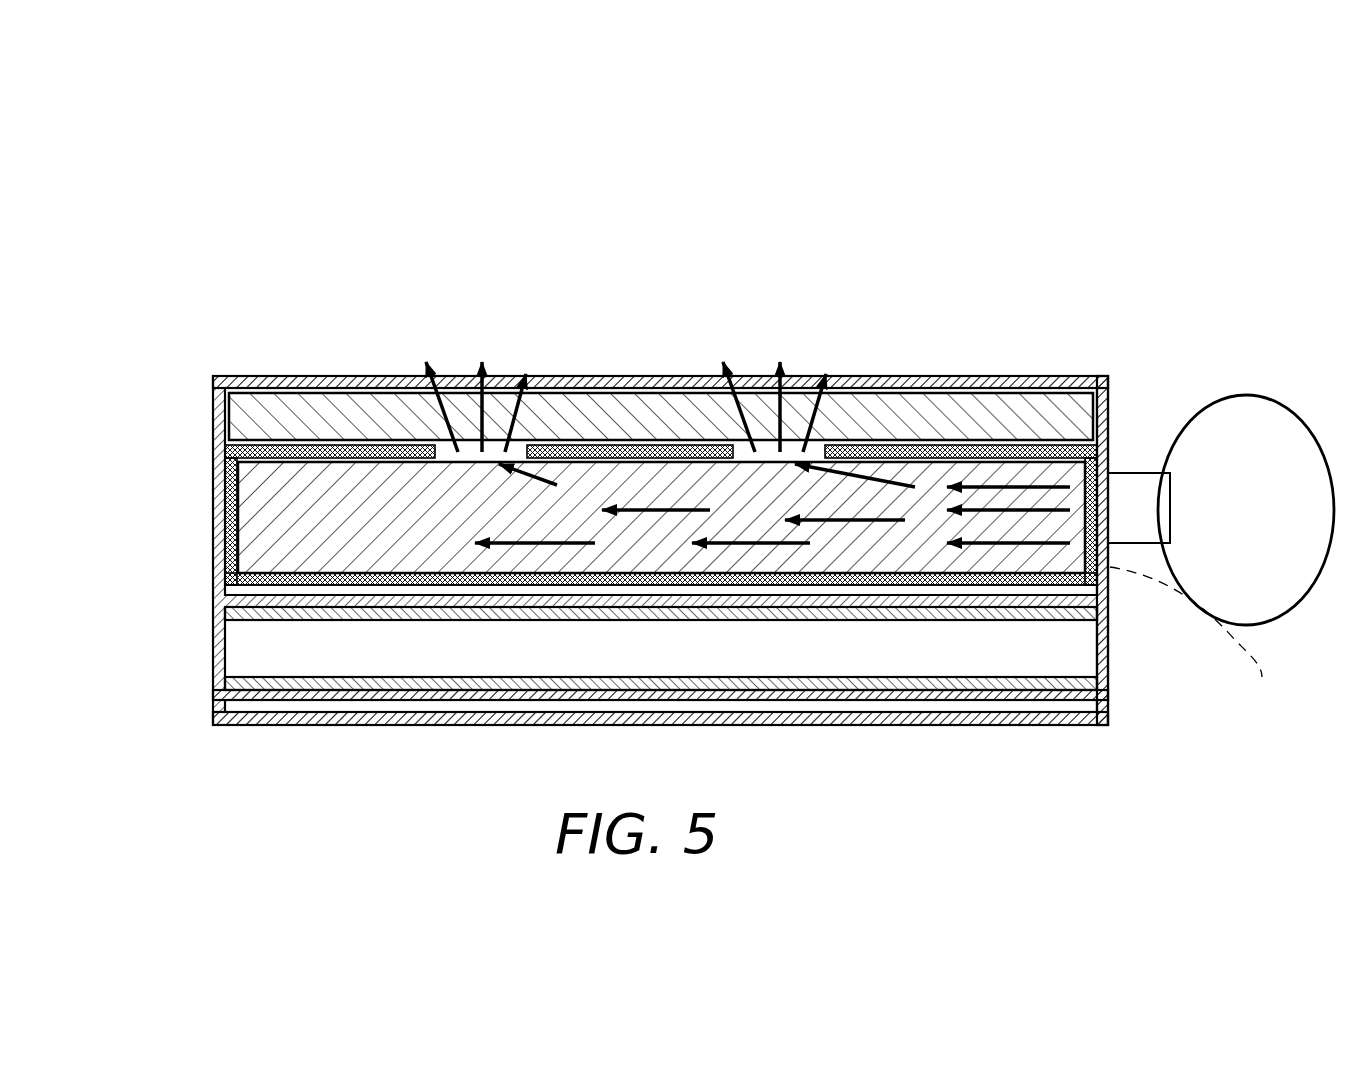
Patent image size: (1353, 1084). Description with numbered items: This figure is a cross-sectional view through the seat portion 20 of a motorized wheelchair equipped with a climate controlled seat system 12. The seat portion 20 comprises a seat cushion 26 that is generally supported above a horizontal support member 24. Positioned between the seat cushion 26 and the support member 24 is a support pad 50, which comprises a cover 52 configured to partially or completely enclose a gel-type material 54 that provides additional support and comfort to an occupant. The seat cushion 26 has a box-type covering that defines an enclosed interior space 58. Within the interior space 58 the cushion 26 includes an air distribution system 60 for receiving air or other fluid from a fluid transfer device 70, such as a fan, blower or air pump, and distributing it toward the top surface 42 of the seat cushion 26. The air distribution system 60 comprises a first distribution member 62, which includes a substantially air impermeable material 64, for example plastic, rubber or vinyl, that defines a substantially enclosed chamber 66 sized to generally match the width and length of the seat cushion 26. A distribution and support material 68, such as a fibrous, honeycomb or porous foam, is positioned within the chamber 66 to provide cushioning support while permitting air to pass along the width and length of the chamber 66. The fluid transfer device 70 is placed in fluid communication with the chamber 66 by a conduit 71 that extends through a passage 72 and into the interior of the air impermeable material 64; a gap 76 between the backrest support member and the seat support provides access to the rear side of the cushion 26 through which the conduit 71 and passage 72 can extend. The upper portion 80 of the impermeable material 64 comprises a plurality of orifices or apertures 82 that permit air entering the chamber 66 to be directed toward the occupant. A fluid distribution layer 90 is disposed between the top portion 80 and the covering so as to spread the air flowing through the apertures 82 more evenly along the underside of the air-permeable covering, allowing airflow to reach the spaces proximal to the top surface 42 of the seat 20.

The climate controlled seat system 12 is at (1157, 236).
The seat portion 20 is at (785, 297).
The horizontal support member 24 is at (303, 732).
The seat cushion 26 is at (194, 423).
The top surface 42 is at (902, 377).
The support pad 50 is at (209, 660).
The cover 52 is at (215, 635).
The gel-type material 54 is at (1087, 377).
The interior space 58 is at (1085, 590).
The air distribution system 60 is at (1106, 439).
The first distribution member 62 is at (224, 510).
The air impermeable material 64 is at (237, 590).
The chamber 66 is at (432, 523).
The distribution and support material 68 is at (878, 548).
The fluid transfer device 70 is at (1288, 355).
The conduit 71 is at (1132, 483).
The passage 72 is at (1198, 639).
The gap 76 is at (1119, 704).
The upper portion 80 is at (931, 441).
The apertures 82 is at (527, 447).
The fluid distribution layer 90 is at (312, 410).